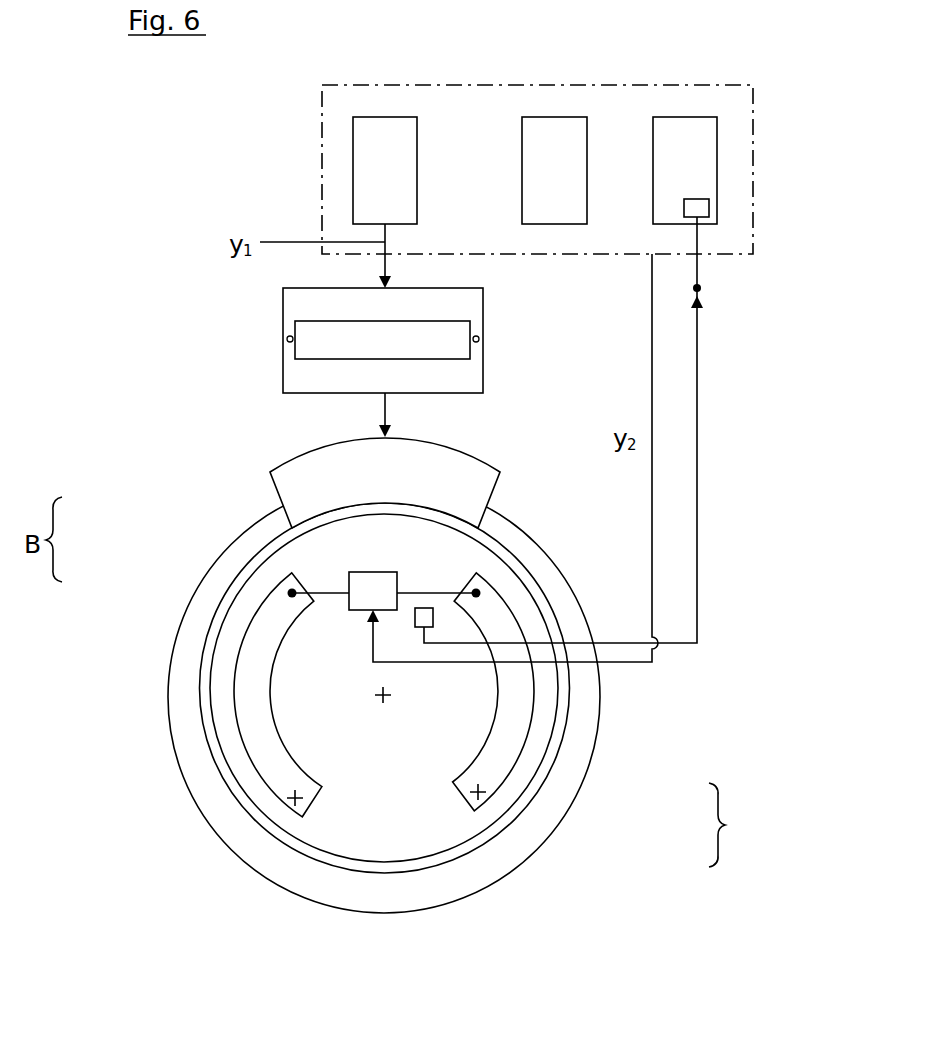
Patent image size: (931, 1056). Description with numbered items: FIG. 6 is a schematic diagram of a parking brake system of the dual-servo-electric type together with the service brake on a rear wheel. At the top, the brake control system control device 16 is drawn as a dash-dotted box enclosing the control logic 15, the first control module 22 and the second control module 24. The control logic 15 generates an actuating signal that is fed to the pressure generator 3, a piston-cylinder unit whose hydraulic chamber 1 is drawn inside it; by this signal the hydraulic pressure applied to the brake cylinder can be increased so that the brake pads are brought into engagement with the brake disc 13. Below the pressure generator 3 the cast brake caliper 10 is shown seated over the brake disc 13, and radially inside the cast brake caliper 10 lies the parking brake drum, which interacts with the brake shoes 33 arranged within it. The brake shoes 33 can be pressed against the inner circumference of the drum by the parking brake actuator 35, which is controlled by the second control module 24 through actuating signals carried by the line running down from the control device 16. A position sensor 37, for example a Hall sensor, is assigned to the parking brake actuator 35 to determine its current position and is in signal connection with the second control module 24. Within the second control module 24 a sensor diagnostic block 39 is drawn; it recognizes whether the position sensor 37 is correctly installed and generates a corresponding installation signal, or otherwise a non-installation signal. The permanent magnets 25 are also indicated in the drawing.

The hydraulic chamber 1 is at (305, 378).
The pressure generator 3 is at (283, 306).
The cast brake caliper 10 is at (297, 478).
The brake disc 13 is at (230, 570).
The control logic 15 is at (400, 181).
The brake control system control device 16 is at (753, 118).
The first control module 22 is at (569, 174).
The second control module 24 is at (701, 168).
The permanent magnets 25 is at (492, 775).
The brake shoes 33 is at (543, 770).
The parking brake actuator 35 is at (352, 610).
The position sensor 37 is at (410, 623).
The sensor diagnostic block 39 is at (705, 207).